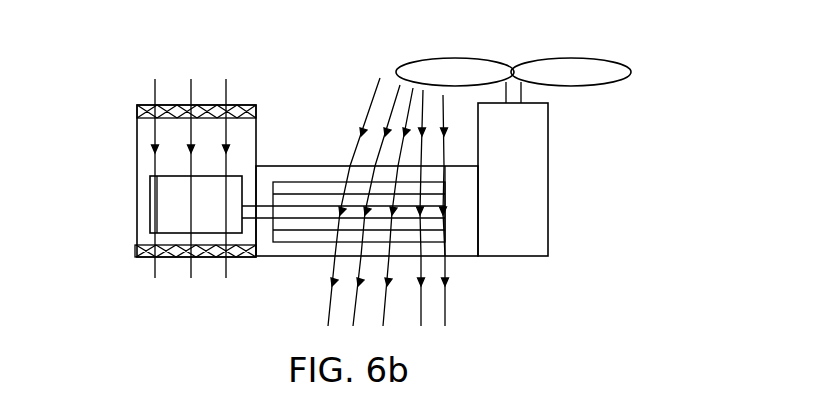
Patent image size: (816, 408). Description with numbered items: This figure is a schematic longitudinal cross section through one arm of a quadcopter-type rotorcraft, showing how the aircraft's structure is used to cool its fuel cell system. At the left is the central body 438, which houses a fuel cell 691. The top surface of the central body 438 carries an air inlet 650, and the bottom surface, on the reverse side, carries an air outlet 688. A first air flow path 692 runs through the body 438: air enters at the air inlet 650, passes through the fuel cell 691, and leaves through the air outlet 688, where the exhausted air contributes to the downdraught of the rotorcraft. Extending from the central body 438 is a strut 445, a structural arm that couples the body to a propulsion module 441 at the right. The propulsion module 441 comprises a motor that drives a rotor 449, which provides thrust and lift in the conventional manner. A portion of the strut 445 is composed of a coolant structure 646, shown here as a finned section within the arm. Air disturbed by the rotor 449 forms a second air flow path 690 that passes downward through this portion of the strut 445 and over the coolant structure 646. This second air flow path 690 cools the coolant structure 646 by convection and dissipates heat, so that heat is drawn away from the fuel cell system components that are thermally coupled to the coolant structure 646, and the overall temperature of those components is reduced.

The central body 438 is at (222, 104).
The propulsion module 441 is at (548, 173).
The strut 445 is at (468, 212).
The rotor 449 is at (630, 78).
The coolant structure 646 is at (448, 256).
The air inlet 650 is at (255, 105).
The air outlet 688 is at (167, 253).
The second air flow path 690 is at (372, 84).
The fuel cell 691 is at (150, 208).
The first air flow path 692 is at (152, 88).